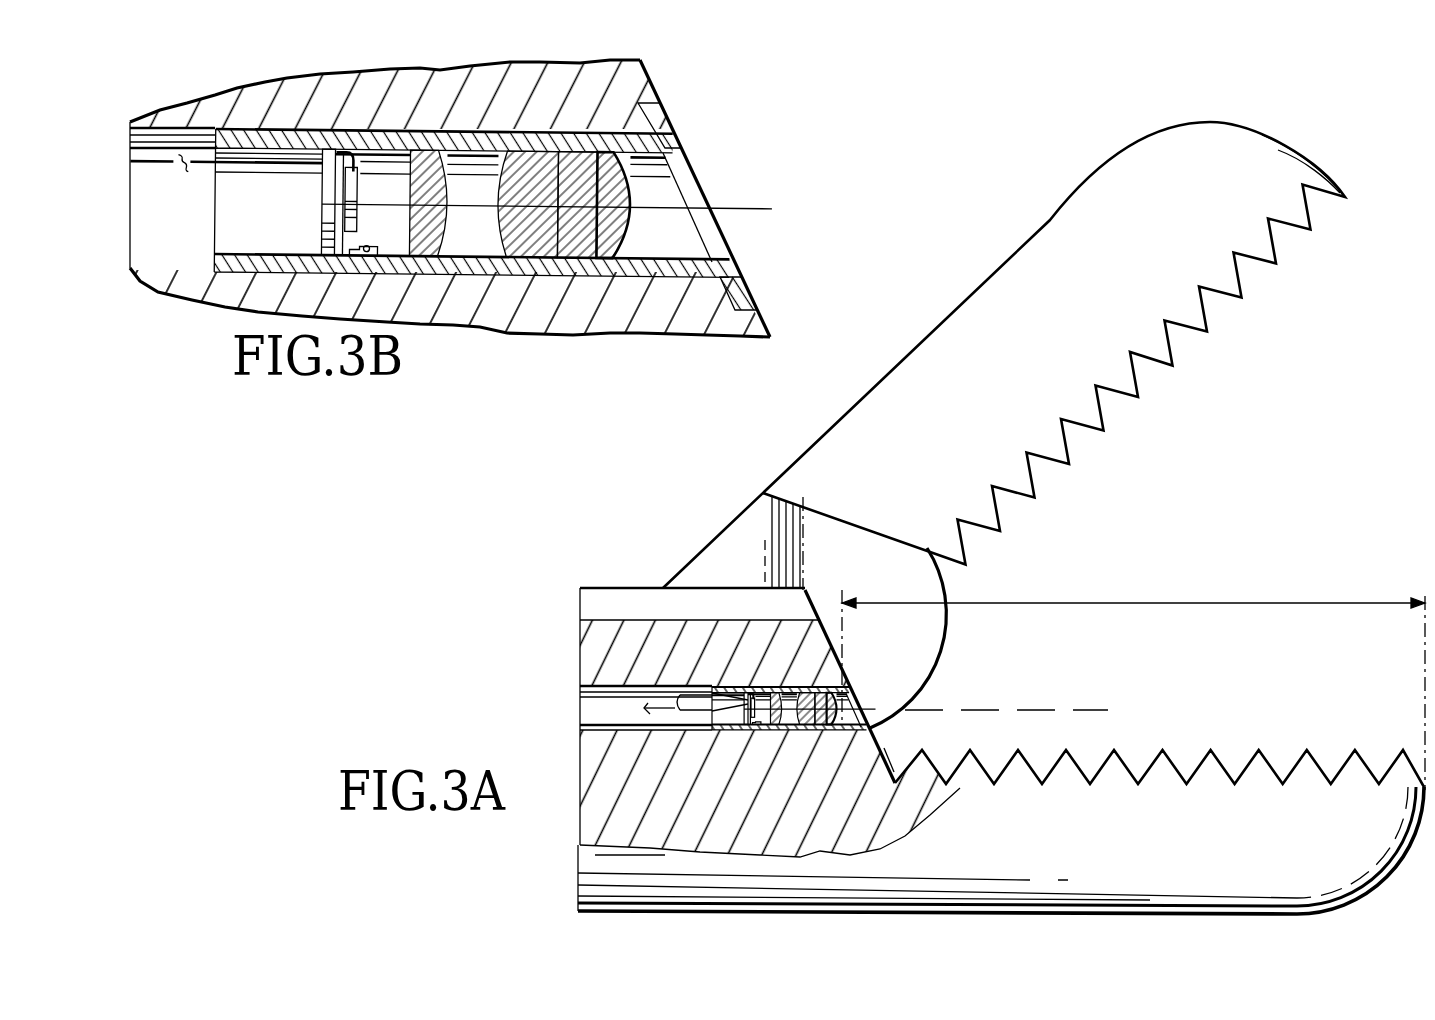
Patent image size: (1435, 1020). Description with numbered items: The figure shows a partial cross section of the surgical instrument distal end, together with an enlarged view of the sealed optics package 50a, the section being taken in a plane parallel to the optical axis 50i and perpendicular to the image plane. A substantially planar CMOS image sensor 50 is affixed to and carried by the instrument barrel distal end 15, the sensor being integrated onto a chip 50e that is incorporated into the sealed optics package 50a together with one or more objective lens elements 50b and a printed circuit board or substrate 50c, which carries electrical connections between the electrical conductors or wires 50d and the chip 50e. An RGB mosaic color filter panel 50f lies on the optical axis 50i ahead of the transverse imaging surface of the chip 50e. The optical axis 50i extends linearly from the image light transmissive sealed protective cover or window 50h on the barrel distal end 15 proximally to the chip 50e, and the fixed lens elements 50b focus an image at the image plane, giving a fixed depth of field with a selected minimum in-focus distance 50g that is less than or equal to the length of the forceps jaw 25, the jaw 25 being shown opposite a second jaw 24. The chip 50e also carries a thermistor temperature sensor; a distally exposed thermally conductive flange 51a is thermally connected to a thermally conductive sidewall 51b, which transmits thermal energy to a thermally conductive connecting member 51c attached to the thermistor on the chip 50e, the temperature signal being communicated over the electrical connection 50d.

In FIG. 3A, the CMOS image sensor 50 is at (773, 690).
In FIG. 3B, the sealed optics package 50a is at (671, 100).
In FIG. 3A, the sealed optics package 50a is at (884, 700).
In FIG. 3B, the objective lens elements 50b is at (600, 167).
In FIG. 3B, the printed circuit board or substrate 50c is at (333, 228).
In FIG. 3A, the electrical conductors or wires 50d is at (692, 685).
In FIG. 3B, the chip 50e is at (335, 192).
In FIG. 3B, the RGB mosaic color filter panel 50f is at (367, 177).
In FIG. 3A, the minimum in-focus distance 50g is at (1193, 580).
In FIG. 3B, the sealed protective cover or window 50h is at (687, 187).
In FIG. 3A, the sealed protective cover or window 50h is at (862, 697).
In FIG. 3B, the optical axis 50i is at (762, 208).
In FIG. 3A, the optical axis 50i is at (1085, 712).
In FIG. 3B, the thermally conductive flange 51a is at (675, 128).
In FIG. 3B, the thermally conductive sidewall 51b is at (475, 140).
In FIG. 3B, the thermally conductive connecting member 51c is at (368, 252).
In FIG. 3A, the instrument barrel distal end 15 is at (840, 665).
In FIG. 3A, the upper jaw blade 24 is at (1308, 150).
In FIG. 3A, the forceps jaw 25 is at (1387, 870).